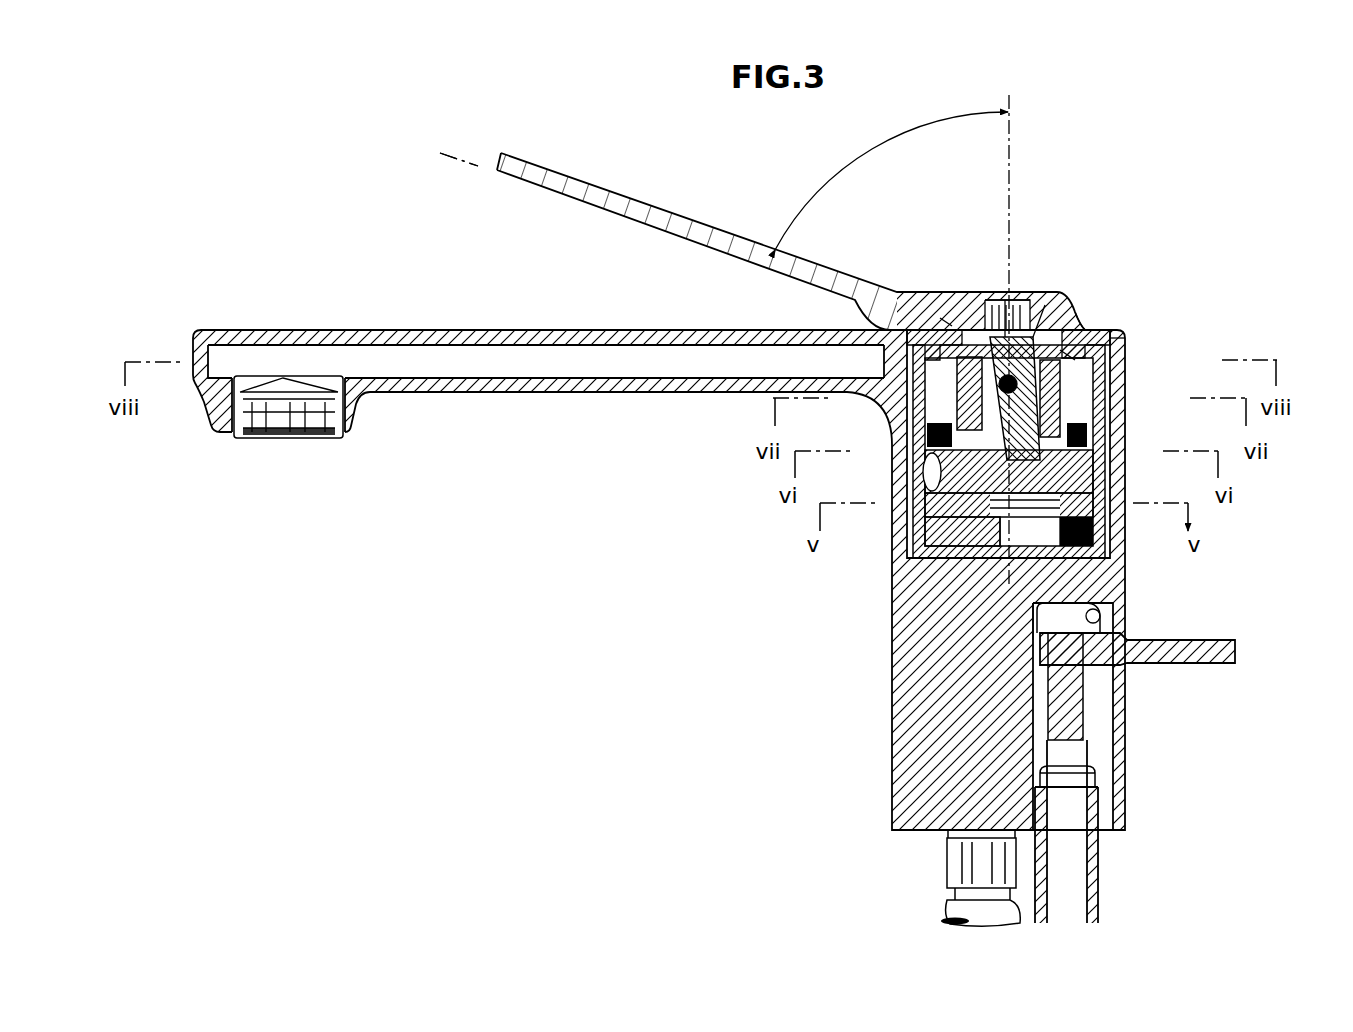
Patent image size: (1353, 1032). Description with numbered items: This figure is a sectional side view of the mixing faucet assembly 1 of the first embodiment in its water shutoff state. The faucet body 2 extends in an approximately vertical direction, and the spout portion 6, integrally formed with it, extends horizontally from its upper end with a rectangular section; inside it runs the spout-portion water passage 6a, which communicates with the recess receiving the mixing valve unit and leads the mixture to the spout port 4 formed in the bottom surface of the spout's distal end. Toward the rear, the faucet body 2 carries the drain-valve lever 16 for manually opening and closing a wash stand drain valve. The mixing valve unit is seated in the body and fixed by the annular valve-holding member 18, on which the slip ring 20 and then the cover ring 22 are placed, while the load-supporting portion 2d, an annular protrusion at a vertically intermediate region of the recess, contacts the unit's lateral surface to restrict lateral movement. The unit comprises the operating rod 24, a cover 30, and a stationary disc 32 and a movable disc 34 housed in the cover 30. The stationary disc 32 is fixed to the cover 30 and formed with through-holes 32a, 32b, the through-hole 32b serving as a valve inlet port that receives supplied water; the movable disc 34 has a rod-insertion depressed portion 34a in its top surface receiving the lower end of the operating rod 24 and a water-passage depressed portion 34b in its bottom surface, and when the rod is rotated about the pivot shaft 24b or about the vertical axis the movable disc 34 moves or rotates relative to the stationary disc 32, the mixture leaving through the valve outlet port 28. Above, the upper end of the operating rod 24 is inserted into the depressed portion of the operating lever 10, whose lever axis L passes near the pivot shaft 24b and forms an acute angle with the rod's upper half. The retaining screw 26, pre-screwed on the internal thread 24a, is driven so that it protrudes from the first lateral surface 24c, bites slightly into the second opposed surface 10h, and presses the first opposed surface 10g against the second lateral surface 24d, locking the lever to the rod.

The mixing faucet assembly 1 is at (600, 620).
The faucet body 2 is at (900, 736).
The load-supporting portion 2d is at (1122, 342).
The spout port 4 is at (256, 440).
The spout portion 6 is at (464, 329).
The spout-portion water passage 6a is at (570, 374).
The operating lever 10 is at (652, 204).
The first opposed surface 10g is at (947, 322).
The second opposed surface 10h is at (1087, 330).
The drain-valve lever 16 is at (1210, 641).
The valve-holding member 18 is at (905, 416).
The slip ring 20 is at (900, 336).
The cover ring 22 is at (942, 340).
The operating rod 24 is at (980, 330).
The internal thread 24a is at (1012, 300).
The pivot shaft 24b is at (1065, 352).
The first lateral surface 24c is at (1048, 302).
The second lateral surface 24d is at (985, 304).
The retaining screw 26 is at (1035, 330).
The valve outlet port 28 is at (912, 470).
The cover 30 is at (1107, 520).
The stationary disc 32 is at (870, 560).
The through-hole 32a is at (1100, 535).
The through-hole 32b is at (887, 572).
The movable disc 34 is at (880, 550).
The rod-insertion depressed portion 34a is at (1125, 455).
The water-passage depressed portion 34b is at (1123, 523).
The handle axis line L is at (456, 153).